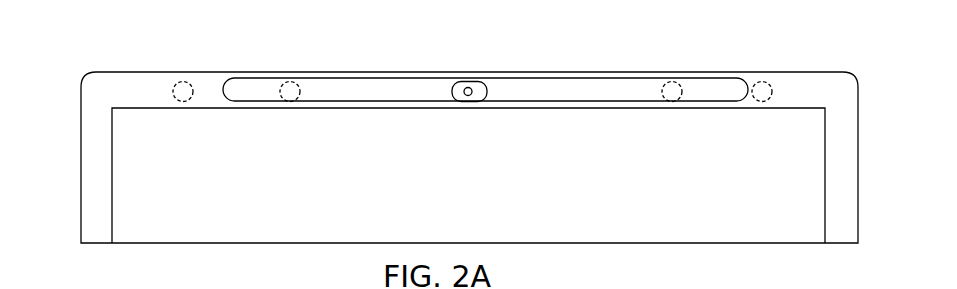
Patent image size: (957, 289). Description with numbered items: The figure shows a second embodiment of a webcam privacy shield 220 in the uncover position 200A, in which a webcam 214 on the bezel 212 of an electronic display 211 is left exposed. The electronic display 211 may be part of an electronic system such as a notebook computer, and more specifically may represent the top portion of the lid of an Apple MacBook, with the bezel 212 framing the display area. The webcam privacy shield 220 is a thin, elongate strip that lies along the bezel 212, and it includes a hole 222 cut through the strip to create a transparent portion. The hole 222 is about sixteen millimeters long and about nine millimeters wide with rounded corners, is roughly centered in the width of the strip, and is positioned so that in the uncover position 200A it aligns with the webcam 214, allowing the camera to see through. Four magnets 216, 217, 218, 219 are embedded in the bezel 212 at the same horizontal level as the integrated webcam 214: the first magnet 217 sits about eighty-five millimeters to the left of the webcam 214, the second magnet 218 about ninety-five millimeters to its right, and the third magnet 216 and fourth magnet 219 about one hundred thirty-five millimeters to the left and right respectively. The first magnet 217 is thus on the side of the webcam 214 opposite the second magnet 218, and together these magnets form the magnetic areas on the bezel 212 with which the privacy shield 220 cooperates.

The uncover position 200A is at (815, 63).
The electronic display 211 is at (185, 205).
The bezel 212 is at (81, 90).
The webcam 214 is at (467, 87).
The third magnet 216 is at (176, 77).
The first magnet 217 is at (278, 75).
The second magnet 218 is at (658, 76).
The fourth magnet 219 is at (753, 76).
The webcam privacy shield 220 is at (362, 90).
The hole 222 is at (488, 88).